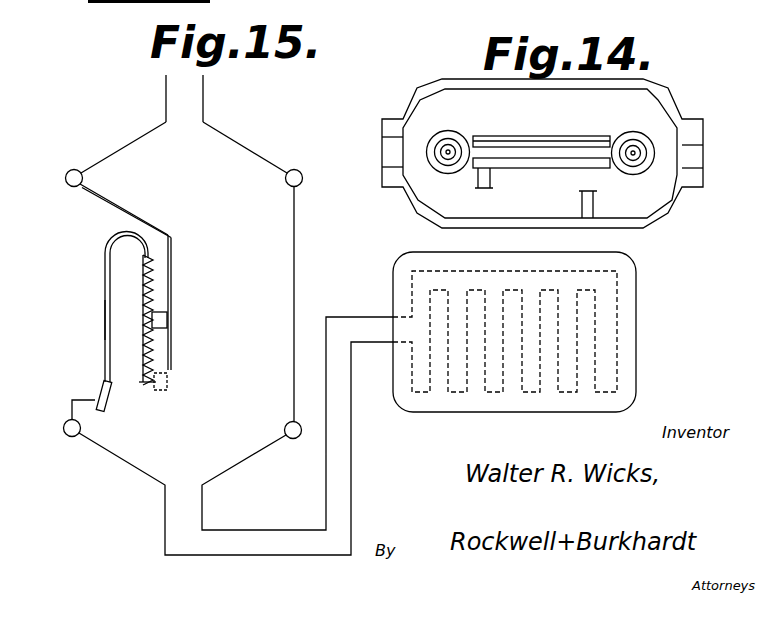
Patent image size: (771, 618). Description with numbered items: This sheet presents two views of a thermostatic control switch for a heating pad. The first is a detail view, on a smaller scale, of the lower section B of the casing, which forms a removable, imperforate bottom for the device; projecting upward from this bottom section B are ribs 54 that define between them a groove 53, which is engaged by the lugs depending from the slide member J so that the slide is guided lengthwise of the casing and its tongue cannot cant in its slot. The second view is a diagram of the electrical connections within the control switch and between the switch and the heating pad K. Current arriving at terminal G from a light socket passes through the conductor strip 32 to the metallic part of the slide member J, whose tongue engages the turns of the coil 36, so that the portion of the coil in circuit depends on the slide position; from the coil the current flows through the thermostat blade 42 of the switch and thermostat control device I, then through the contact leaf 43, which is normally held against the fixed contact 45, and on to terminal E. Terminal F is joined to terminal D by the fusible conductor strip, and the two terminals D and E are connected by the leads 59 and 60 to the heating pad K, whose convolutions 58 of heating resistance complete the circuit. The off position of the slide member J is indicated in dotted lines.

In FIG. 15, the terminal G is at (69, 170).
In FIG. 15, the terminal F is at (298, 171).
In FIG. 15, the terminal E is at (66, 434).
In FIG. 15, the terminal D is at (297, 437).
In FIG. 15, the conductor strip 32 is at (172, 250).
In FIG. 15, the switch and thermostat control device I is at (110, 306).
In FIG. 15, the thermostat blade 42 is at (105, 320).
In FIG. 15, the coil 36 is at (141, 292).
In FIG. 15, the slide member J is at (167, 320).
In FIG. 15, the contact leaf 43 is at (103, 383).
In FIG. 15, the fixed contact 45 is at (94, 398).
In FIG. 15, the lead 60 is at (352, 447).
In FIG. 15, the lead 59 is at (325, 340).
In FIG. 15, the heating pad K is at (622, 293).
In FIG. 15, the convolutions of heating resistance 58 is at (617, 345).
In FIG. 14, the lower section of the casing B is at (443, 98).
In FIG. 14, the groove 53 is at (493, 150).
In FIG. 14, the ribs 54 is at (544, 143).